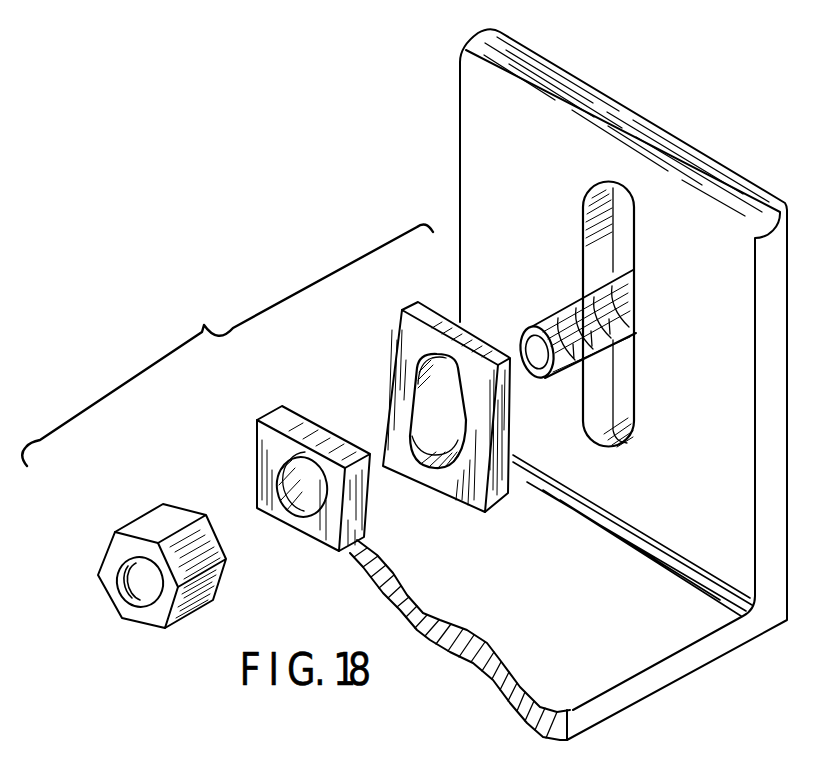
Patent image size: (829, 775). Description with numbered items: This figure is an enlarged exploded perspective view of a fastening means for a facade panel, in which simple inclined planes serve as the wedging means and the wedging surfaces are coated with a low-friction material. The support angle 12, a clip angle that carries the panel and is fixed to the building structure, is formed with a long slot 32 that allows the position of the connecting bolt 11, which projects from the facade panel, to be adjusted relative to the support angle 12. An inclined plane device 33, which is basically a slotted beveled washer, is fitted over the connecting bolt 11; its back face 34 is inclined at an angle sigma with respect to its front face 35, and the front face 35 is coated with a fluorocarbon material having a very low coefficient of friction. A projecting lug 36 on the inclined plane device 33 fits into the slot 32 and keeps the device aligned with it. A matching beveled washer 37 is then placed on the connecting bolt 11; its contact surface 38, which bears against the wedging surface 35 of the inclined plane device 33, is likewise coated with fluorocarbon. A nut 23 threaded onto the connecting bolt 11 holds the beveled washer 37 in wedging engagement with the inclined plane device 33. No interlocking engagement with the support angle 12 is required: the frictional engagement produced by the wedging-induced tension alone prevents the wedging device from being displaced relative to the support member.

The support angle 12 is at (480, 103).
The long slot 32 is at (625, 243).
The connecting bolt 11 is at (580, 291).
The inclined plane device 33 is at (421, 389).
The back face 34 is at (441, 317).
The front face 35 is at (412, 338).
The projecting lug 36 is at (444, 418).
The beveled washer 37 is at (296, 460).
The contact surface 38 is at (323, 424).
The nut 23 is at (143, 525).